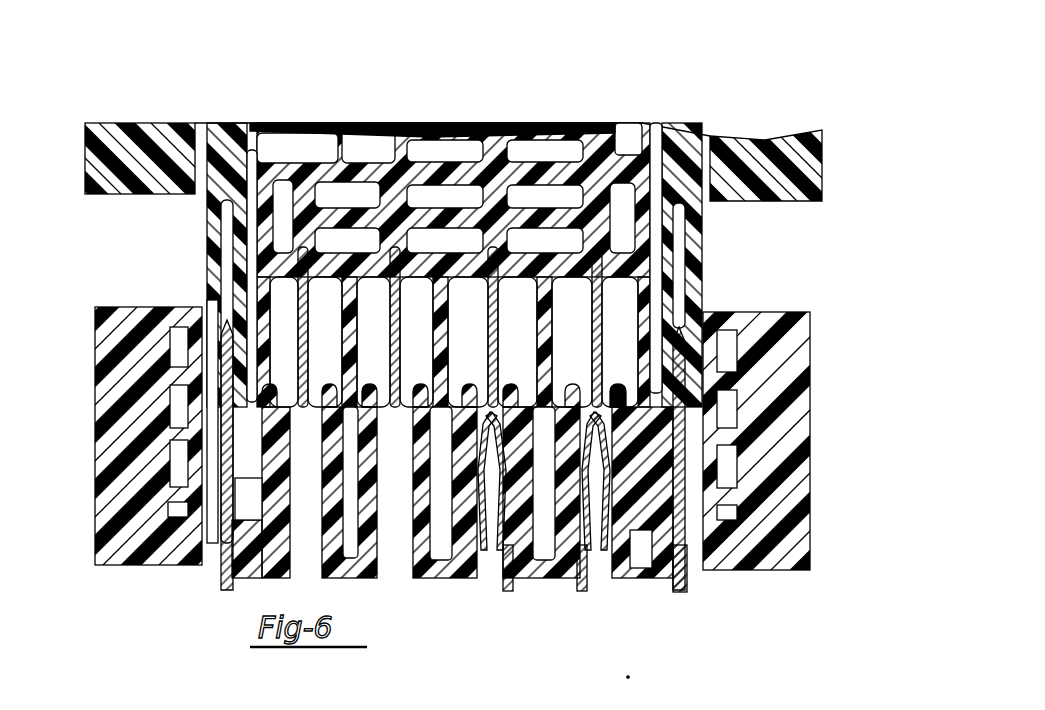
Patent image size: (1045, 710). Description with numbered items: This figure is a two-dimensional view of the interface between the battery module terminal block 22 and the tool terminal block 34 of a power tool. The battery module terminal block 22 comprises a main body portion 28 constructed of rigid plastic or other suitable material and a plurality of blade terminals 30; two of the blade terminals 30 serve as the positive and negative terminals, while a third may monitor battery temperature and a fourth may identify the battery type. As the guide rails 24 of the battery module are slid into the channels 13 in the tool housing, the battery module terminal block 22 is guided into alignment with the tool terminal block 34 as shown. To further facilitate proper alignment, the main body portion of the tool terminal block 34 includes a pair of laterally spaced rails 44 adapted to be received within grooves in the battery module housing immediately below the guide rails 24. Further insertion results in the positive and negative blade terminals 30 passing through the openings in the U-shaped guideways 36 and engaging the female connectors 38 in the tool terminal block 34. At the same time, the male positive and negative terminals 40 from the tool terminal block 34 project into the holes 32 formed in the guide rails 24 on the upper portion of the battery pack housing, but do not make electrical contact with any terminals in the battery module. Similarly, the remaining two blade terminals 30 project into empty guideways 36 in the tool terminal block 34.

The channels 13 is at (118, 135).
The battery module terminal block 22 is at (505, 115).
The guide rails 24 is at (225, 180).
The main body portion 28 is at (262, 143).
The blade terminals 30 is at (345, 300).
The holes 32 is at (228, 300).
The tool terminal block 34 is at (459, 519).
The U-shaped guideways 36 is at (303, 420).
The female connectors 38 is at (480, 428).
The male positive and negative terminals 40 is at (227, 440).
The laterally spaced rails 44 is at (125, 352).